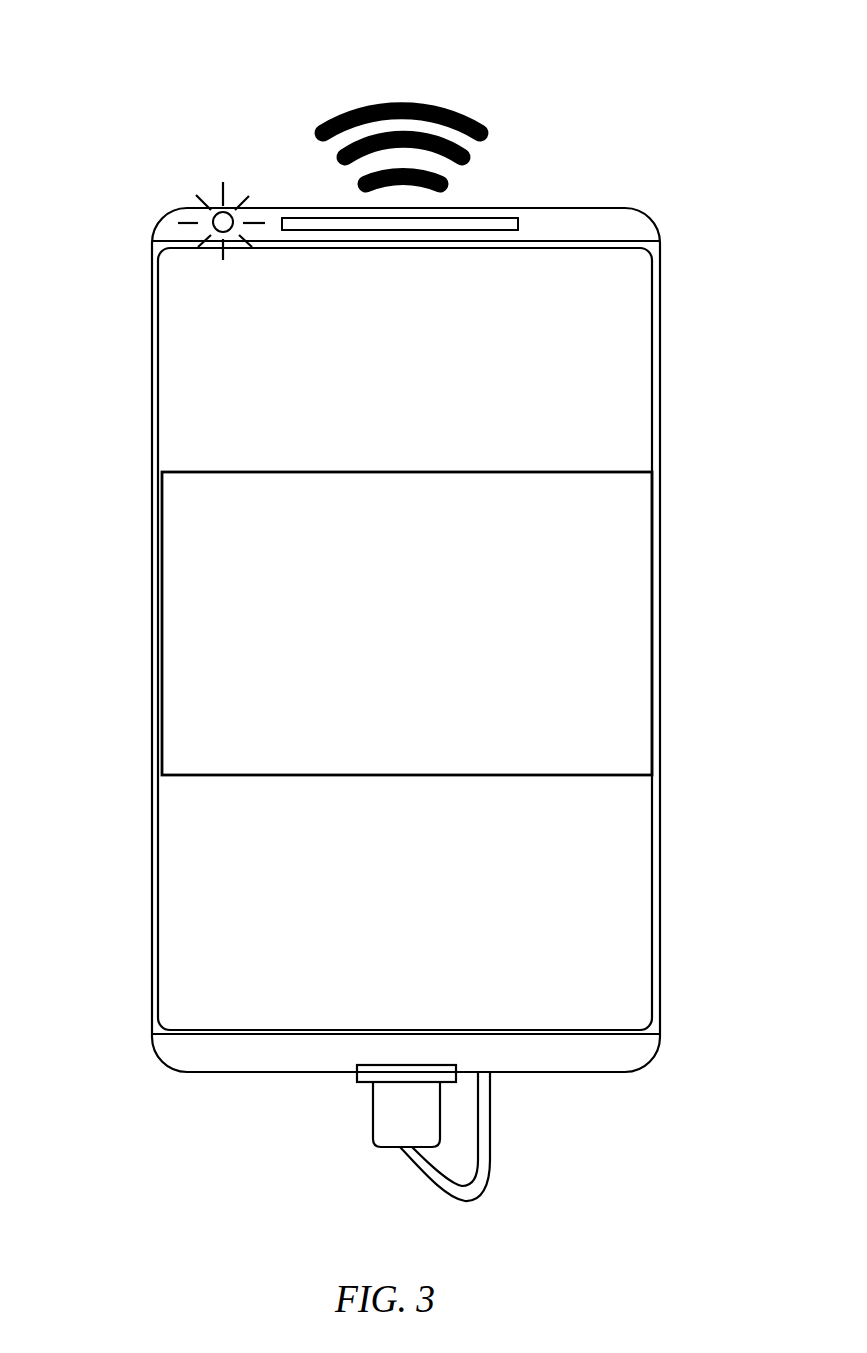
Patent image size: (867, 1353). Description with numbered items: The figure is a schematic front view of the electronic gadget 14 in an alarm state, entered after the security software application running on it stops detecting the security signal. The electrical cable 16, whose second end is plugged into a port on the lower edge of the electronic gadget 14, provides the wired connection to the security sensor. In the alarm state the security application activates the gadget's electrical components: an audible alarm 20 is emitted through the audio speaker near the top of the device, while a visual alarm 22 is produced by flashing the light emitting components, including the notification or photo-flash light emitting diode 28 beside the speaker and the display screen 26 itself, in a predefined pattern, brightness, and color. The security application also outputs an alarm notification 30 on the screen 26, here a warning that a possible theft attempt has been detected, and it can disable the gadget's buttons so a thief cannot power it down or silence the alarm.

The electronic gadget 14 is at (703, 208).
The electrical cable 16 is at (491, 1132).
The audible alarm 20 is at (468, 115).
The visual alarm 22 is at (215, 190).
The display screen 26 is at (660, 332).
The light emitting diode 28 is at (222, 233).
The alarm notification 30 is at (205, 472).